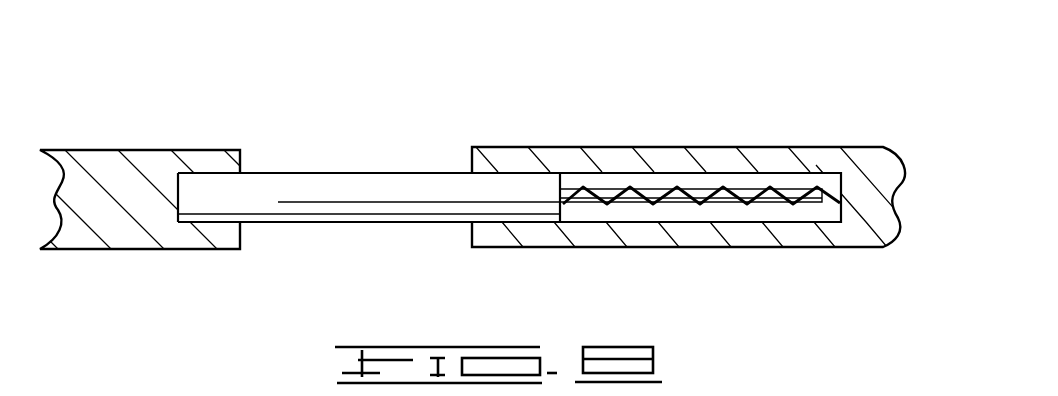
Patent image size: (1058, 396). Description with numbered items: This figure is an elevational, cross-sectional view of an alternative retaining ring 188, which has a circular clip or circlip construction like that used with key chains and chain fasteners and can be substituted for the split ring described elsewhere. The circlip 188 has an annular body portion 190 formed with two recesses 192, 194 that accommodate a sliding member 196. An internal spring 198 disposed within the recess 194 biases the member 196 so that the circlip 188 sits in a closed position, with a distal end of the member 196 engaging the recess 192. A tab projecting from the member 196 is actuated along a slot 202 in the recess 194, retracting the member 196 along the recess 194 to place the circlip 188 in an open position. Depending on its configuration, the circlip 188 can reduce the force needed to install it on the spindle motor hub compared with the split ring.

The retaining ring 188 is at (257, 88).
The annular body portion 190 is at (865, 147).
The recess 192 is at (250, 233).
The recess 194 is at (459, 238).
The sliding member 196 is at (333, 173).
The internal spring 198 is at (745, 194).
The slot 202 is at (607, 192).